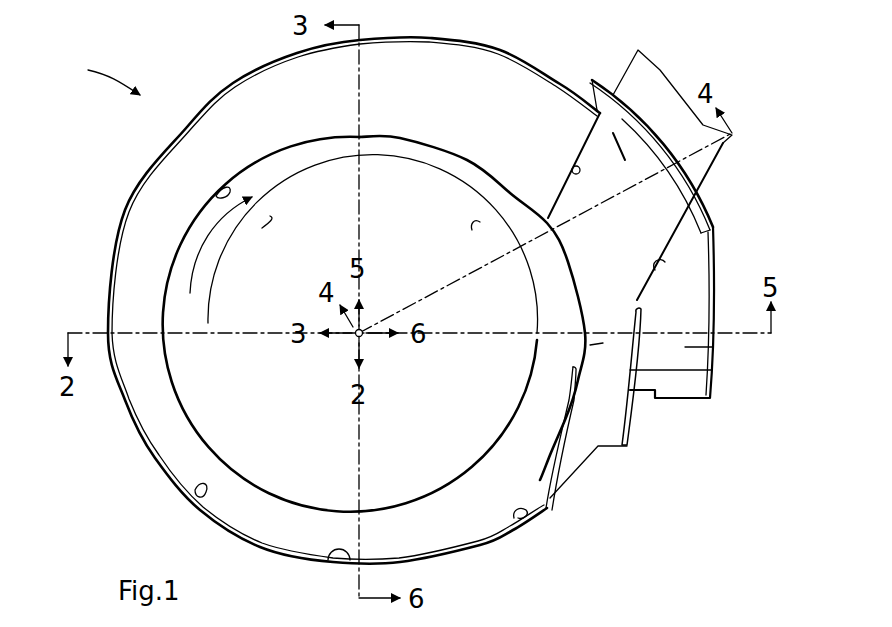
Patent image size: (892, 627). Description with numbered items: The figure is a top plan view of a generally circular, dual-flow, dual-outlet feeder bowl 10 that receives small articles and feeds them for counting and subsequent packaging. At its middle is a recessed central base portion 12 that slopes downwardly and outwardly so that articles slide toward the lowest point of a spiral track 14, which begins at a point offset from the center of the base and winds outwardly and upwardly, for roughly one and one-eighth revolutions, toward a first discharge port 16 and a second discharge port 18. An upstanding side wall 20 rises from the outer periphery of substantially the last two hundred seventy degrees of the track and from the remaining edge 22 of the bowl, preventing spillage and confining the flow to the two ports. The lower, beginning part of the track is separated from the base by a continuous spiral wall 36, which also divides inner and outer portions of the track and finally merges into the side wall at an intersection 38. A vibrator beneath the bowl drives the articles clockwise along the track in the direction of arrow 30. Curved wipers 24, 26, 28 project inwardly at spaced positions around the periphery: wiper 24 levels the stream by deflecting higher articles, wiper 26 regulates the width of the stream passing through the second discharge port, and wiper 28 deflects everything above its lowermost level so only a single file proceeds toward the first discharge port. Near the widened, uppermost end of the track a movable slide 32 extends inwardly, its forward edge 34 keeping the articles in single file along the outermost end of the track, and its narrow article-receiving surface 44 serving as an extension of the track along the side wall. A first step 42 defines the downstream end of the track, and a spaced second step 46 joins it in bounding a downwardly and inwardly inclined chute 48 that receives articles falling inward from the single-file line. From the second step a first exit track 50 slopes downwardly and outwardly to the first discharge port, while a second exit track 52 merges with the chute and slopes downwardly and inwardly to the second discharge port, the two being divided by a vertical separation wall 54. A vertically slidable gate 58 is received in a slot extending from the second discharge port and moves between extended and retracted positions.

The feeder bowl 10 is at (96, 75).
The central base portion 12 is at (308, 471).
The spiral track 14 is at (280, 138).
The first discharge port 16 is at (687, 402).
The second discharge port 18 is at (607, 448).
The side wall 20 is at (134, 432).
The remaining edge 22 is at (516, 520).
The wiper 24 is at (198, 496).
The wiper 26 is at (625, 392).
The wiper 28 is at (596, 112).
The arrow 30 is at (200, 264).
The movable slide 32 is at (634, 72).
The forward edge 34 is at (662, 203).
The continuous wall 36 is at (218, 194).
The intersection 38 is at (330, 560).
The first step 42 is at (572, 170).
The article-receiving surface 44 is at (676, 207).
The second step 46 is at (664, 262).
The inclined chute 48 is at (616, 275).
The first exit track 50 is at (712, 347).
The second exit track 52 is at (590, 345).
The separation wall 54 is at (712, 370).
The gate 58 is at (558, 500).